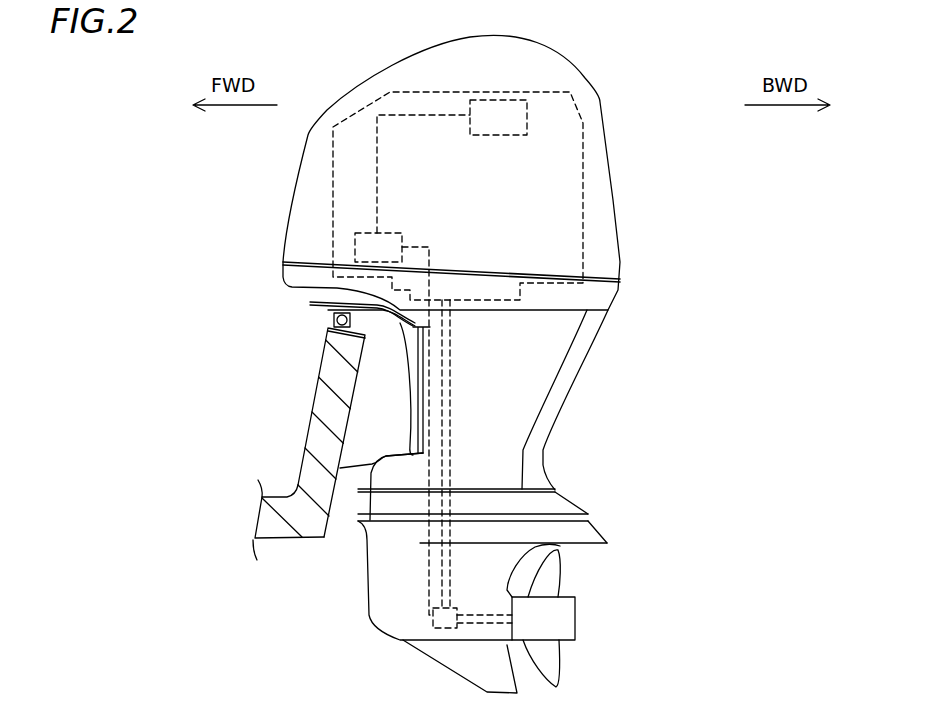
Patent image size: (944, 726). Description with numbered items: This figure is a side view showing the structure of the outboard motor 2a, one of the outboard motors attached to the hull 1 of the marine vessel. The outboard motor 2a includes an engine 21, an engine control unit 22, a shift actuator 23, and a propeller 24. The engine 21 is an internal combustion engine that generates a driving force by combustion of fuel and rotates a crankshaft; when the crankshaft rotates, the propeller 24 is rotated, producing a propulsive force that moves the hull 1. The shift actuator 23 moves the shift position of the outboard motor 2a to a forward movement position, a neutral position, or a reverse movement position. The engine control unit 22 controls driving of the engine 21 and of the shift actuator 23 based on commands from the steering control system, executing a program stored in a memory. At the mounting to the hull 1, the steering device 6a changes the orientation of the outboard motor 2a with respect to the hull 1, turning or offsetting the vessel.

The hull 1 is at (298, 470).
The outboard motor 2a is at (650, 146).
The steering device 6a is at (400, 322).
The engine 21 is at (585, 215).
The engine control unit (ECU) 22 is at (491, 136).
The shift actuator 23 is at (400, 232).
The propeller 24 is at (561, 585).